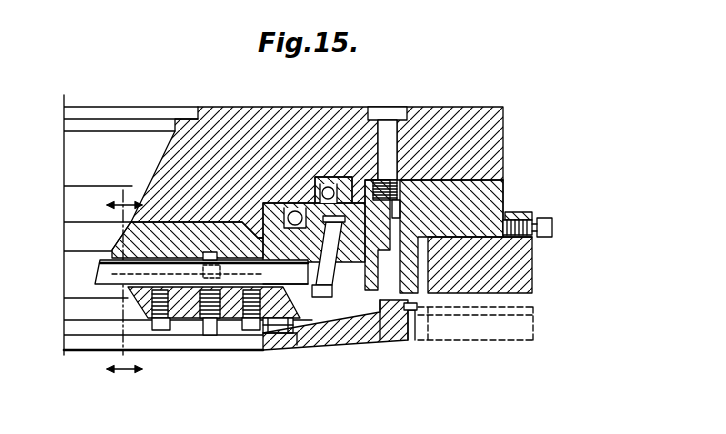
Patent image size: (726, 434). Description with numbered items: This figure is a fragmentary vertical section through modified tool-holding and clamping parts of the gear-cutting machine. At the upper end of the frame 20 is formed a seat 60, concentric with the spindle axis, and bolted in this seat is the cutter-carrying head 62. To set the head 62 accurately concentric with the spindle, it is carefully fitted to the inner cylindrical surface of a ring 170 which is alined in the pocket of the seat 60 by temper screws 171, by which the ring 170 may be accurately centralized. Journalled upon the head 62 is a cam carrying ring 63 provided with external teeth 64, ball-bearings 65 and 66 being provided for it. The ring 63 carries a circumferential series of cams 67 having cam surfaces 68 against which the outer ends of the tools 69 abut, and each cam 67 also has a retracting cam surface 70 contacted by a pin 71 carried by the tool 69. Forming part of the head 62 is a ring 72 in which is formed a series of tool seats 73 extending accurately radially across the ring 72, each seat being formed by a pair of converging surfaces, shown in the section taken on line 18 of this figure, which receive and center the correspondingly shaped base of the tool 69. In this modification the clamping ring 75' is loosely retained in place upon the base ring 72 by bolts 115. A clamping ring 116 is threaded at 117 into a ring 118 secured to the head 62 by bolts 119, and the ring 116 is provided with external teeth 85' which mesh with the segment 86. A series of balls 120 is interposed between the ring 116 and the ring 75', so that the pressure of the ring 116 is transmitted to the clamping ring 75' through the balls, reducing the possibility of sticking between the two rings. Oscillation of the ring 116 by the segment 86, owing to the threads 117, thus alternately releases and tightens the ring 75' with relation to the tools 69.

The section line 18- 18 is at (124, 291).
The frame 20 is at (532, 289).
The seat 60 is at (505, 237).
The cutter-carrying head 62 is at (218, 106).
The cam carrying ring 63 is at (367, 270).
The external teeth 64 is at (393, 205).
The ball-bearing 65 is at (328, 177).
The ball-bearing 66 is at (282, 203).
The cam 67 is at (340, 295).
The cam surface 68 is at (314, 297).
The tool 69 is at (95, 281).
The retracting cam surface 70 is at (258, 233).
The pin 71 is at (285, 276).
The ring 72 is at (158, 228).
The tool seat 73 is at (118, 256).
The clamping ring 75' is at (252, 364).
The external teeth 85' is at (421, 347).
The segment 86 is at (532, 340).
The bolt 115 is at (210, 337).
The clamping ring 116 is at (303, 333).
The threads 117 is at (380, 347).
The ring 118 is at (415, 303).
The bolt 119 is at (392, 106).
The ball 120 is at (278, 337).
The ring 170 is at (505, 198).
The temper screw 171 is at (552, 227).